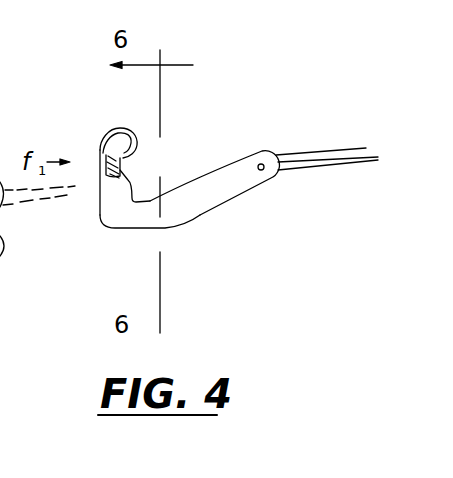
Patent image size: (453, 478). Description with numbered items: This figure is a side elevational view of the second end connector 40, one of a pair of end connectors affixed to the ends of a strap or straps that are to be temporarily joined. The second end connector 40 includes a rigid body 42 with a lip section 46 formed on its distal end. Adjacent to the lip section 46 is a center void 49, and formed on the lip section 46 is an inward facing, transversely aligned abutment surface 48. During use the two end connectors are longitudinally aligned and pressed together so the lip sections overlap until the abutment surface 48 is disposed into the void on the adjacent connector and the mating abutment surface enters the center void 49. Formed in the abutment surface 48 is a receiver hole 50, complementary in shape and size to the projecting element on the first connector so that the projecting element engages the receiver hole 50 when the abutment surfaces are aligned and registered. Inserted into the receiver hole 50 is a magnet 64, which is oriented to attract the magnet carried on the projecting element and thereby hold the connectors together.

The second end connector 40 is at (208, 228).
The rigid body 42 is at (132, 227).
The lip section 46 is at (101, 208).
The abutment surface 48 is at (134, 138).
The center void 49 is at (143, 157).
The receiver hole 50 is at (131, 164).
The magnet 64 is at (117, 130).